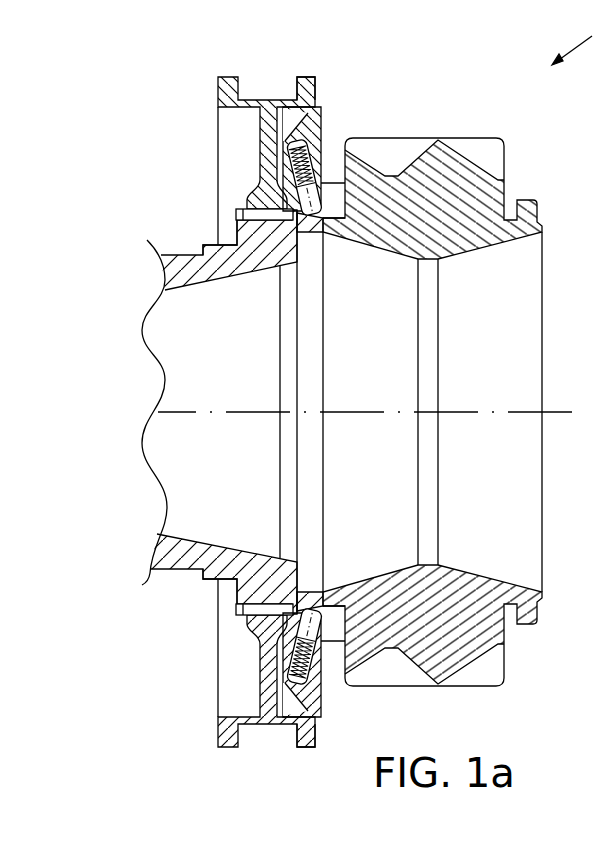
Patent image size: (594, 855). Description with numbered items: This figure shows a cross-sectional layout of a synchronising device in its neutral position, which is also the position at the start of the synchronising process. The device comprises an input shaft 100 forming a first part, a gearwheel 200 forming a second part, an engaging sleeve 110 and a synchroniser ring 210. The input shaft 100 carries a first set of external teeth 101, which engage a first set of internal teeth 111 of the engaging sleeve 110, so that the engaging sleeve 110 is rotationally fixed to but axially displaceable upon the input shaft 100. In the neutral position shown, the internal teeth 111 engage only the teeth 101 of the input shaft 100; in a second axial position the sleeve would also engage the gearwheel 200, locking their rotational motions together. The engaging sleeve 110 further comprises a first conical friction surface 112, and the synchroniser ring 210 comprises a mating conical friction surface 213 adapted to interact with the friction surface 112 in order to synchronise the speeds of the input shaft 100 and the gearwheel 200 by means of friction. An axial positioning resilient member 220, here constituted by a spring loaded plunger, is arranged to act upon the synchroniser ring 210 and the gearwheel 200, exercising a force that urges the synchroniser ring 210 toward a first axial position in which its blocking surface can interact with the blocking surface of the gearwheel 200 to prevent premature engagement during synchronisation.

The input shaft 100 is at (186, 258).
The first set of external teeth 101 is at (227, 241).
The engaging sleeve 110 is at (224, 90).
The first set of internal teeth 111 is at (240, 210).
The first conical friction surface 112 is at (296, 102).
The gearwheel 200 is at (463, 178).
The synchroniser ring 210 is at (323, 133).
The mating conical friction surface 213 is at (321, 112).
The axial positioning resilient member 220 is at (340, 185).